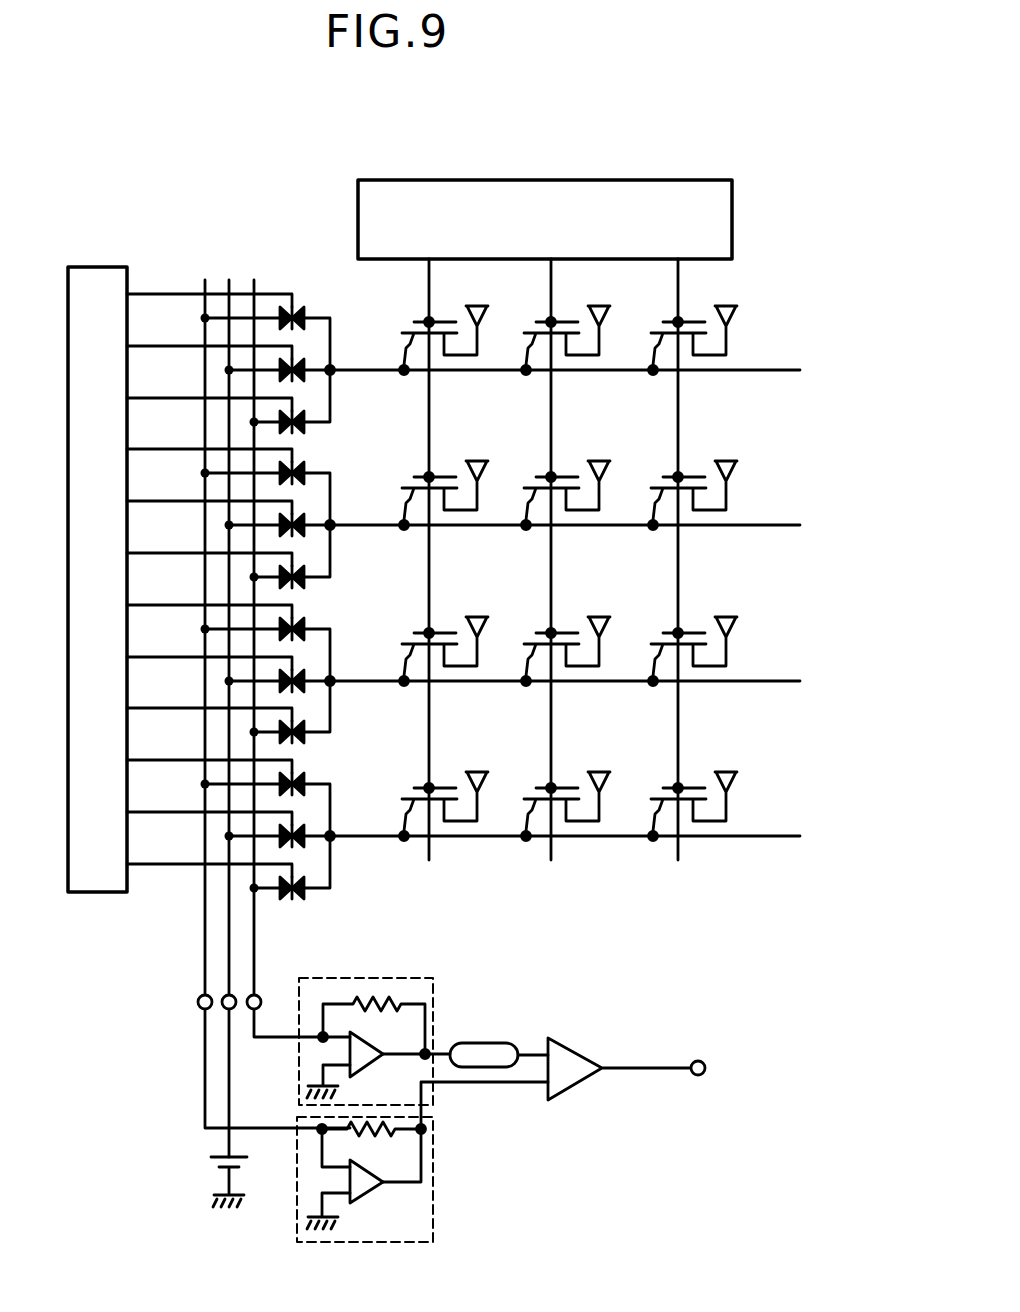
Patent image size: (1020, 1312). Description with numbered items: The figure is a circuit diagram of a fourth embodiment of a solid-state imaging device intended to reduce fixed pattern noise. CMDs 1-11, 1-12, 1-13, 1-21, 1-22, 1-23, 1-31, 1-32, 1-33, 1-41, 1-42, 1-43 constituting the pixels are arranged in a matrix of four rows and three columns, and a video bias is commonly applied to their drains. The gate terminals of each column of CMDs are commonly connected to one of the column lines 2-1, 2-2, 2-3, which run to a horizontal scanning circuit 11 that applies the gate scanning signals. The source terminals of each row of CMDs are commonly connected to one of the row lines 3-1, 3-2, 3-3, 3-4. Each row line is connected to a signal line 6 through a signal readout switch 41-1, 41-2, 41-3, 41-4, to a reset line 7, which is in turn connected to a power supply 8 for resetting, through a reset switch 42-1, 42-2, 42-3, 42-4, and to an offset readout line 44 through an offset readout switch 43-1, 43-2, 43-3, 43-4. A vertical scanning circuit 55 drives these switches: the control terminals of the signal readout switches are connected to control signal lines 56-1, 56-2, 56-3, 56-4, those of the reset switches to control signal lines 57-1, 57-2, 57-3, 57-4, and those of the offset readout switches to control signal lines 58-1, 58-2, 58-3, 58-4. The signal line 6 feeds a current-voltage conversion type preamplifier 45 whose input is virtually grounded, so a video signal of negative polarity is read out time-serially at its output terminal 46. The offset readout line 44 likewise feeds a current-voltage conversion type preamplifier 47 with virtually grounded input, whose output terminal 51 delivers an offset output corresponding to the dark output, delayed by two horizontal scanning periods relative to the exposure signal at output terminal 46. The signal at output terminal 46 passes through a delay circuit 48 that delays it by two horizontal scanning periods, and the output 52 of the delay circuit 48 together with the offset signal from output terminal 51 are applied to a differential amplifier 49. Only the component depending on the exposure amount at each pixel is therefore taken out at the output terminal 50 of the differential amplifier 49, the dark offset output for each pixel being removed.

The horizontal scanning circuit 11 is at (732, 183).
The vertical scanning circuit 55 is at (105, 266).
The control signal line 58-1 is at (160, 292).
The control signal line 57-1 is at (162, 345).
The control signal line 56-1 is at (162, 397).
The control signal line 58-2 is at (162, 448).
The control signal line 57-2 is at (162, 500).
The control signal line 56-2 is at (162, 552).
The control signal line 58-3 is at (162, 604).
The control signal line 57-3 is at (162, 656).
The control signal line 56-3 is at (162, 707).
The control signal line 58-4 is at (162, 759).
The control signal line 57-4 is at (162, 811).
The control signal line 56-4 is at (162, 863).
The offset readout switch 43-1 is at (309, 309).
The reset switch 42-1 is at (306, 379).
The signal readout switch 41-1 is at (306, 428).
The offset readout switch 43-2 is at (307, 465).
The reset switch 42-2 is at (306, 533).
The signal readout switch 41-2 is at (306, 584).
The offset readout switch 43-3 is at (322, 620).
The reset switch 42-3 is at (306, 672).
The signal readout switch 41-3 is at (306, 741).
The offset readout switch 43-4 is at (306, 790).
The reset switch 42-4 is at (306, 842).
The signal readout switch 41-4 is at (306, 895).
The CMD 1-11 is at (403, 323).
The CMD 1-12 is at (528, 334).
The CMD 1-13 is at (656, 334).
The CMD 1-21 is at (418, 481).
The CMD 1-22 is at (528, 477).
The CMD 1-23 is at (655, 477).
The CMD 1-31 is at (416, 634).
The CMD 1-32 is at (530, 631).
The CMD 1-33 is at (655, 631).
The CMD 1-41 is at (413, 792).
The CMD 1-42 is at (530, 774).
The CMD 1-43 is at (655, 774).
The column line 2-1 is at (433, 282).
The column line 2-2 is at (555, 282).
The column line 2-3 is at (682, 282).
The row line 3-1 is at (775, 377).
The row line 3-2 is at (763, 533).
The row line 3-3 is at (763, 689).
The row line 3-4 is at (763, 844).
The reset line 7 is at (225, 930).
The signal line 6 is at (254, 947).
The offset readout line 44 is at (202, 979).
The power supply 8 is at (208, 1159).
The preamplifier 45 is at (373, 977).
The output terminal 46 is at (440, 1052).
The preamplifier 47 is at (433, 1203).
The delay circuit 48 is at (492, 1043).
The differential amplifier 49 is at (585, 1046).
The output terminal 50 is at (702, 1060).
The output terminal 51 is at (450, 1085).
The output 52 is at (523, 1053).